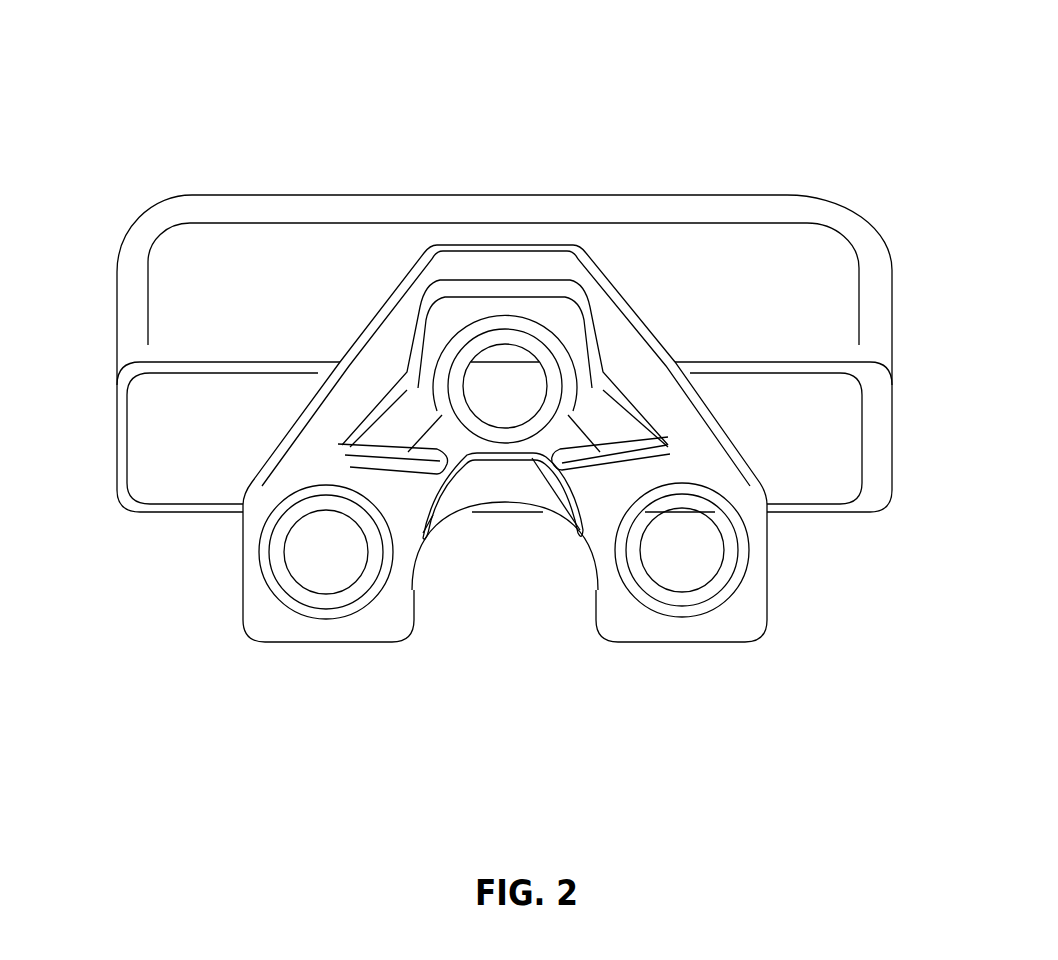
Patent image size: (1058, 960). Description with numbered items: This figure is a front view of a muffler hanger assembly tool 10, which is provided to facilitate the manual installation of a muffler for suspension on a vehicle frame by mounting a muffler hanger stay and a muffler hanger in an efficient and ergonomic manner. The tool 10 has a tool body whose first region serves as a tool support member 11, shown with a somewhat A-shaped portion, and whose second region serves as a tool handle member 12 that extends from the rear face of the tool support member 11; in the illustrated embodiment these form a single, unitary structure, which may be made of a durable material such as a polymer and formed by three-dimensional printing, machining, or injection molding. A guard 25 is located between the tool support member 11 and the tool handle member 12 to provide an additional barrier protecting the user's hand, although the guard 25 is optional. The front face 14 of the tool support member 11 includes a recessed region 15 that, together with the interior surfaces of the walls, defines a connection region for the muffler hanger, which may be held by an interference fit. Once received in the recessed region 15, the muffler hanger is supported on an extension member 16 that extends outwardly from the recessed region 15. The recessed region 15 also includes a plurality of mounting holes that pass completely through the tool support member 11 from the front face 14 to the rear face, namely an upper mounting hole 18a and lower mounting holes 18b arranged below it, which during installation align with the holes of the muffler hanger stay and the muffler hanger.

The tool 10 is at (148, 96).
The tool support member 11 is at (643, 375).
The tool handle member 12 is at (157, 465).
The front face 14 is at (310, 428).
The recessed region 15 is at (595, 423).
The extension member 16 is at (505, 481).
The upper mounting hole 18a is at (512, 392).
The lower mounting hole 18b is at (675, 577).
The guard 25 is at (300, 275).